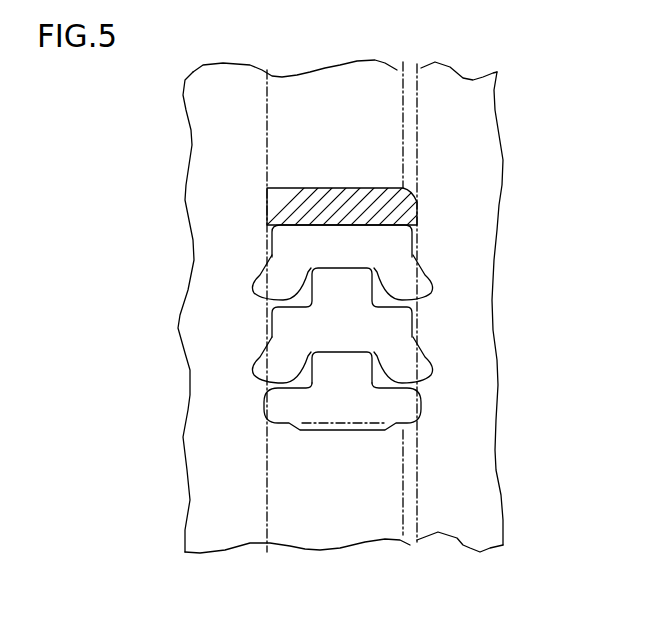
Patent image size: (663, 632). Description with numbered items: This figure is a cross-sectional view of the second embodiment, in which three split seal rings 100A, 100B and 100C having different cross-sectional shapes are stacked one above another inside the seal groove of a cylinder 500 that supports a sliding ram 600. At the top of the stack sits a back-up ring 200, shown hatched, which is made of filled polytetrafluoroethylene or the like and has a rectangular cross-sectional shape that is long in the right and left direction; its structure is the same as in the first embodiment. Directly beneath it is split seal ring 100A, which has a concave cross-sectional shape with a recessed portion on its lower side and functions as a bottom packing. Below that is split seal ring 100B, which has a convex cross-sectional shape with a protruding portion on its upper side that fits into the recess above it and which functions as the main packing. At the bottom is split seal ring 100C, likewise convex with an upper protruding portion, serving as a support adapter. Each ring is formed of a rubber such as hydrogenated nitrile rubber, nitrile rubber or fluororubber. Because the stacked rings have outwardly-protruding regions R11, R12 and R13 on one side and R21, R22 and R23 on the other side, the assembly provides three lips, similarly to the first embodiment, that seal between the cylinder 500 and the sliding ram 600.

The back-up ring 200 is at (418, 212).
The split seal ring 100A is at (340, 264).
The split seal ring 100B is at (340, 326).
The split seal ring 100C is at (340, 423).
The outwardly-protruding region R11 is at (432, 288).
The outwardly-protruding region R12 is at (432, 370).
The outwardly-protruding region R13 is at (402, 407).
The outwardly-protruding region R21 is at (255, 292).
The outwardly-protruding region R22 is at (255, 371).
The outwardly-protruding region R23 is at (264, 411).
The cylinder 500 is at (312, 505).
The sliding ram 600 is at (458, 505).